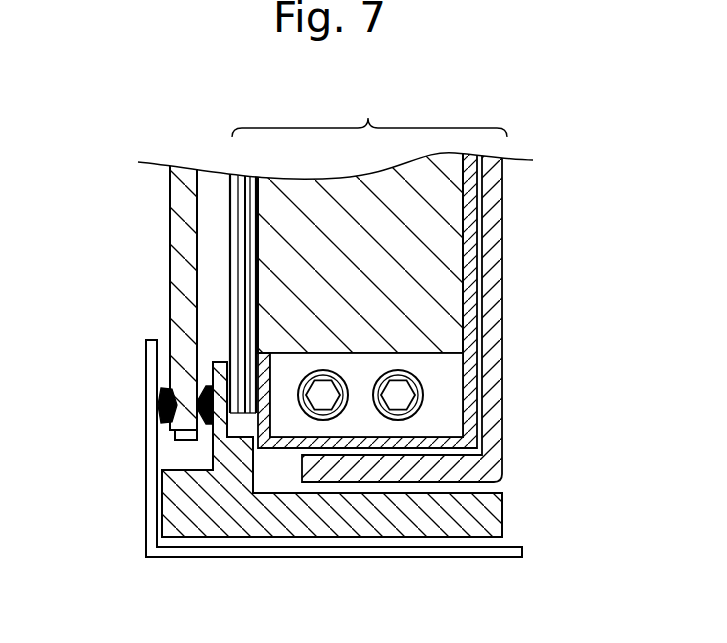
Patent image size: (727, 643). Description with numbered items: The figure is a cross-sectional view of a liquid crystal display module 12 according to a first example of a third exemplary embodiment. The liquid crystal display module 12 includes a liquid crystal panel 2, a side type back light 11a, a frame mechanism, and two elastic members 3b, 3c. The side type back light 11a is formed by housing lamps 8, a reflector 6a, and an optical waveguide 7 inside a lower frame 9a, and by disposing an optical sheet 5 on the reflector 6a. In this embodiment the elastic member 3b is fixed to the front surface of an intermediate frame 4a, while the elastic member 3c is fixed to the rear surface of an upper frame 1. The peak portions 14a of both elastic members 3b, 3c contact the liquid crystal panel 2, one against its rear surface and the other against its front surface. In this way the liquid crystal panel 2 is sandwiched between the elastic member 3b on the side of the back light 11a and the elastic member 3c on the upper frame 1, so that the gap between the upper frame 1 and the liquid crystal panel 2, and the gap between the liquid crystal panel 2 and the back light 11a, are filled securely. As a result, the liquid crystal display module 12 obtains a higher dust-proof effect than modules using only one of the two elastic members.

The upper frame 1 is at (146, 508).
The liquid crystal panel 2 is at (170, 243).
The elastic member 3b is at (208, 386).
The elastic member 3c is at (165, 428).
The intermediate frame 4a is at (463, 520).
The optical sheet 5 is at (230, 196).
The reflector 6a is at (473, 302).
The optical waveguide 7 is at (453, 208).
The lamps 8 is at (423, 383).
The lower frame 9a is at (496, 465).
The side type back light 11a is at (369, 110).
The liquid crystal display module 12 is at (157, 568).
The peak portions 14a is at (163, 389).